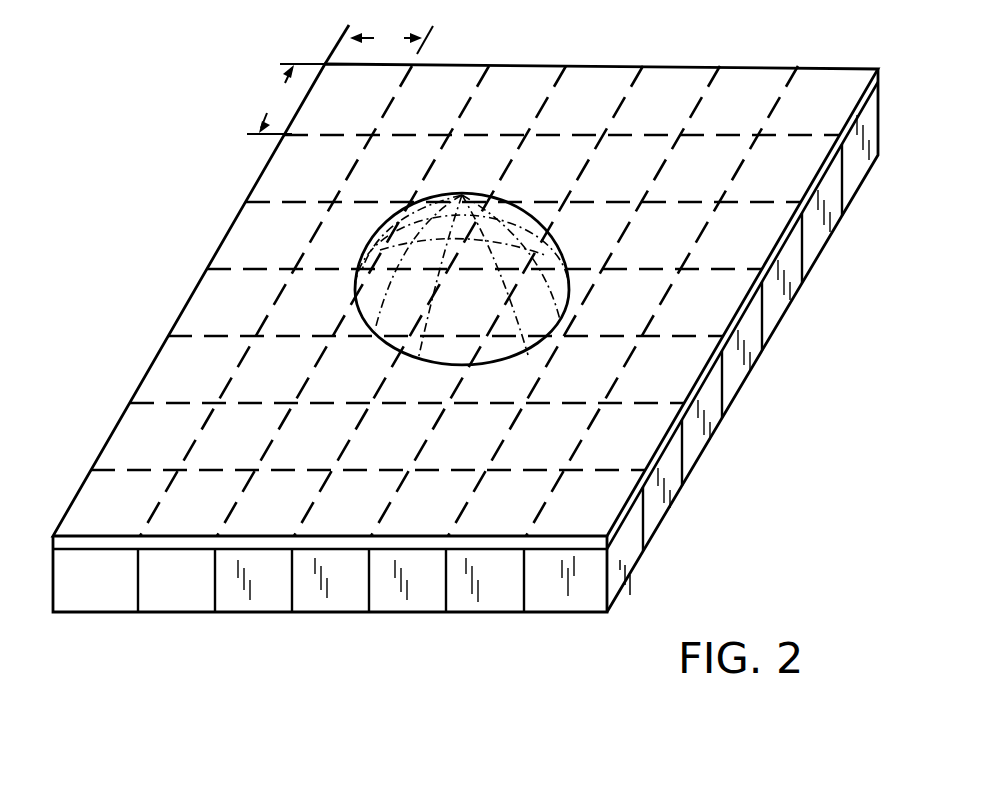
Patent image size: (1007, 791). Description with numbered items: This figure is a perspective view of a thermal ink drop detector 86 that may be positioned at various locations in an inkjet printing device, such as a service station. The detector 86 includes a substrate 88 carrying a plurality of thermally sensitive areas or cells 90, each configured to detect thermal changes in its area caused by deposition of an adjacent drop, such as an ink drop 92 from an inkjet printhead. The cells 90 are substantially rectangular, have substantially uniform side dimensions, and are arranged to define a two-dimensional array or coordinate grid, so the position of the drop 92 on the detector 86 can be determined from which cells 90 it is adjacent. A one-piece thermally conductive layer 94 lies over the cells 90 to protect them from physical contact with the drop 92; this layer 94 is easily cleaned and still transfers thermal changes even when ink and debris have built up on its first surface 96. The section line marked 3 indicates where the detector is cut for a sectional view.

The thermal ink drop detector 86 is at (822, 50).
The substrate 88 is at (724, 417).
The thermally sensitive areas or cells 90 is at (784, 268).
The ink drop 92 is at (385, 243).
The thermally conductive layer 94 is at (93, 543).
The first surface 96 is at (667, 88).
The section line of FIG. 3 is at (128, 590).